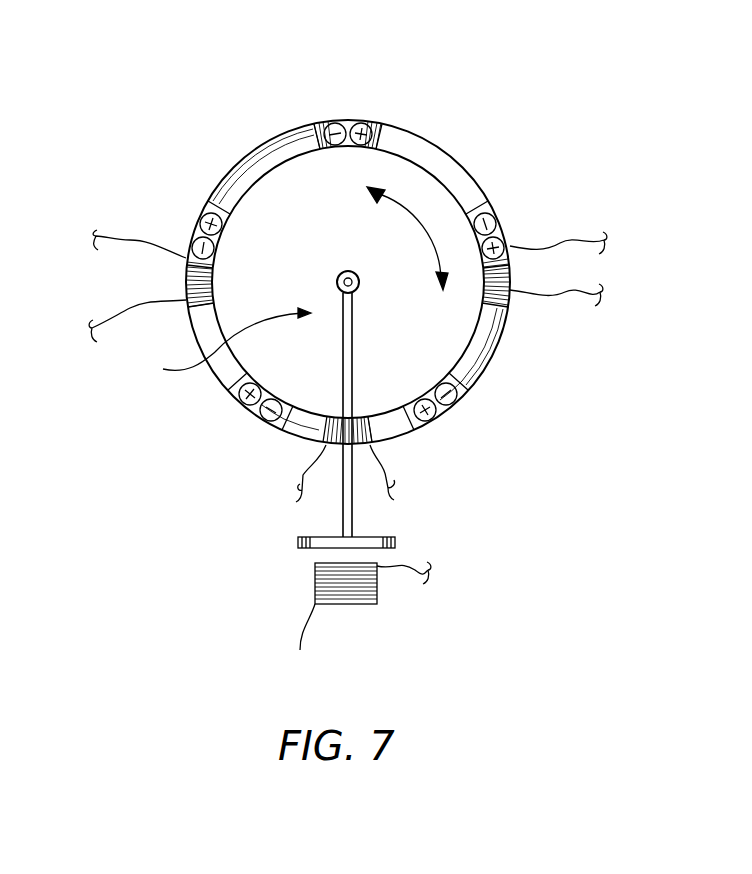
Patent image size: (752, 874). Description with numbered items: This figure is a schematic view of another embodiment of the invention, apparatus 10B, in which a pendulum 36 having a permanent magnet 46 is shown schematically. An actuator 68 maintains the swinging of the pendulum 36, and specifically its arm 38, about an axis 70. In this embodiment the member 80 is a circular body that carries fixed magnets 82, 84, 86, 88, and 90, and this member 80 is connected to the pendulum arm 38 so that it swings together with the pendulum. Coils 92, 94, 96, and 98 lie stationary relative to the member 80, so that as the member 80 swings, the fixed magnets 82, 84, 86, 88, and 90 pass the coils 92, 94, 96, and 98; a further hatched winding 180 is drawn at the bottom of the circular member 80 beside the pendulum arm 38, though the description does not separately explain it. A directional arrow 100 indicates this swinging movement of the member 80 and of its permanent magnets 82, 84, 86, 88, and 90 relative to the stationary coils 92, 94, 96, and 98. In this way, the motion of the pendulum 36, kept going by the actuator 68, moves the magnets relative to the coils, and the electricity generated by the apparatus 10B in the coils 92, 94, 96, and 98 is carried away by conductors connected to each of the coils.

The apparatus 10B is at (450, 124).
The member 80 is at (280, 152).
The coil 94 is at (323, 120).
The fixed magnet 84 is at (367, 105).
The fixed magnet 82 is at (203, 215).
The fixed magnet 86 is at (497, 215).
The fixed magnet 90 is at (240, 408).
The fixed magnet 88 is at (455, 410).
The coil 92 is at (186, 268).
The coil 96 is at (515, 303).
The bottom coil winding 180 is at (343, 445).
The axis 70 is at (348, 271).
The directional arrow 100 is at (413, 211).
The pendulum 36 is at (219, 346).
The arm 38 is at (470, 378).
The coil 98 is at (300, 438).
The permanent magnet 46 is at (378, 538).
The actuator 68 is at (311, 579).